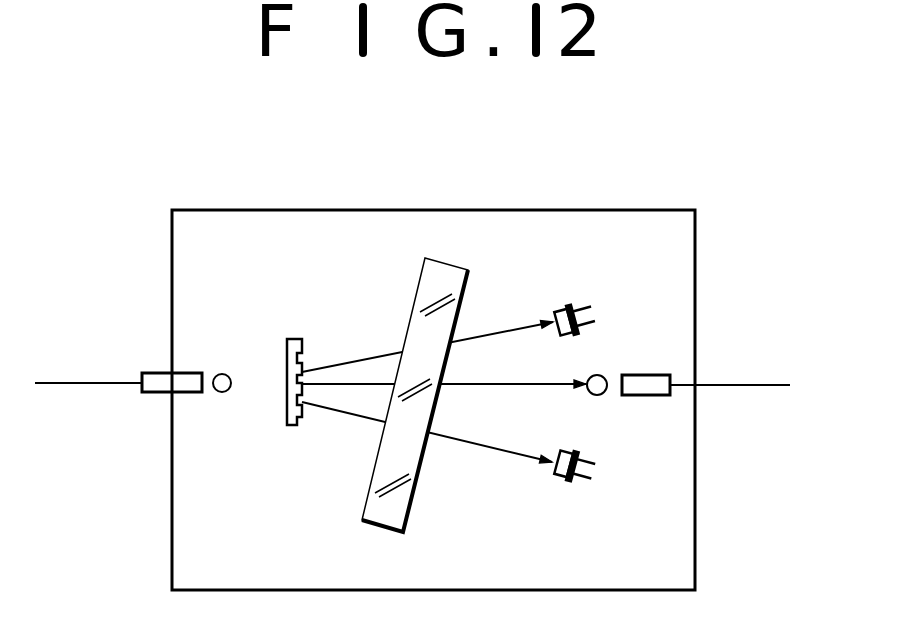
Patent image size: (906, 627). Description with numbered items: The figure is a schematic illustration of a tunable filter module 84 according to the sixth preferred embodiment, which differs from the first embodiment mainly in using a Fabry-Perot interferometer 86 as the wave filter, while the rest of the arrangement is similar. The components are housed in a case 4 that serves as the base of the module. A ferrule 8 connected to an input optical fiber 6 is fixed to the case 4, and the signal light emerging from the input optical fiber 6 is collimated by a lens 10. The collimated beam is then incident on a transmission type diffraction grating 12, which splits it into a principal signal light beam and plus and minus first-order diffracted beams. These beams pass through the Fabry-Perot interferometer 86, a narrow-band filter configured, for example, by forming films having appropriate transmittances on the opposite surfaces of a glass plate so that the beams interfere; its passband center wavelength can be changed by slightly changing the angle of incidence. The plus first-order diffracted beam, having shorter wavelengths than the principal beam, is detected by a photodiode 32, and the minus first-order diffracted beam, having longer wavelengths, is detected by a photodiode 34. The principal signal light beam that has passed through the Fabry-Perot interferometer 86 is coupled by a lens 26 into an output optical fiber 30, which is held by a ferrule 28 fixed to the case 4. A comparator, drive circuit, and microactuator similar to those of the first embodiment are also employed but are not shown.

The case 4 is at (307, 210).
The tunable filter module 84 is at (534, 200).
The input optical fiber 6 is at (83, 382).
The ferrule 8 is at (157, 393).
The lens 10 is at (223, 373).
The transmission type diffraction grating 12 is at (285, 407).
The Fabry-Perot interferometer 86 is at (422, 298).
The photodiode 32 is at (568, 303).
The photodiode 34 is at (560, 483).
The lens 26 is at (603, 374).
The ferrule 28 is at (643, 396).
The output optical fiber 30 is at (742, 383).